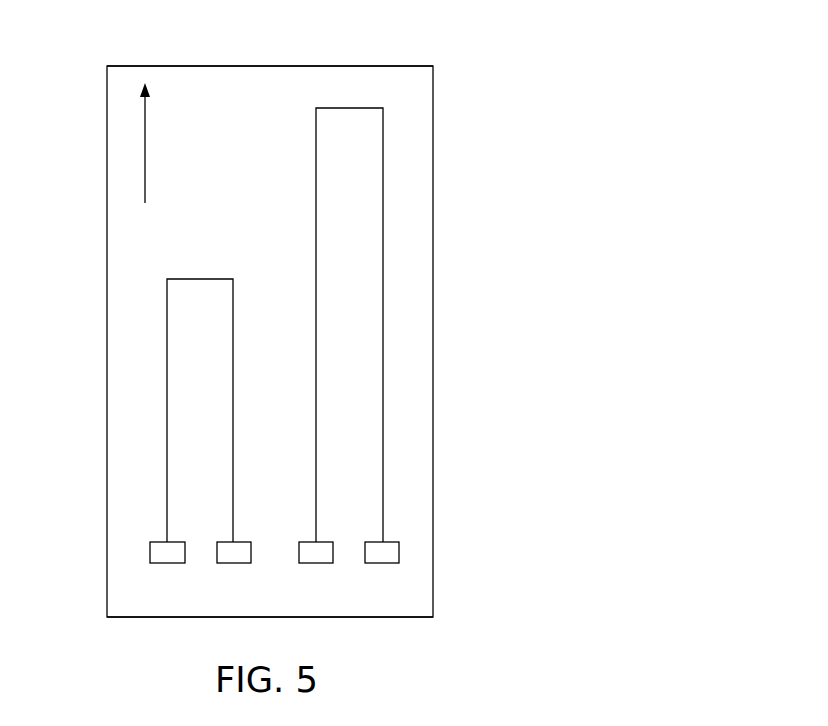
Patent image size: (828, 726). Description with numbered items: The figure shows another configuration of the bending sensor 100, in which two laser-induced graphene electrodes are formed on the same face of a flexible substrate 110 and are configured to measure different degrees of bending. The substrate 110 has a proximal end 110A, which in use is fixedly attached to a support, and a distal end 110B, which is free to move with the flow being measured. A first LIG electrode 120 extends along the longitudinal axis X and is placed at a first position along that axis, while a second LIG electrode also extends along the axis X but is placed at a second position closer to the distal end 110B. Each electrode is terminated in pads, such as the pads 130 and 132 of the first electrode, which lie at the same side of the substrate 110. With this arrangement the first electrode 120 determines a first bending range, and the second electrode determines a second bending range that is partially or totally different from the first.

The bending sensor 100 is at (603, 33).
The flexible substrate 110 is at (417, 441).
The proximal end 110A is at (160, 617).
The distal end 110B is at (433, 66).
The longitudinal axis X is at (143, 142).
The first LIG electrode 120 is at (150, 358).
The pad 130 is at (157, 553).
The pad 132 is at (232, 557).